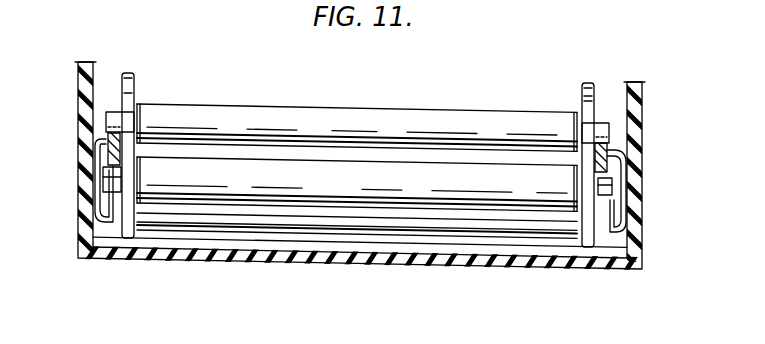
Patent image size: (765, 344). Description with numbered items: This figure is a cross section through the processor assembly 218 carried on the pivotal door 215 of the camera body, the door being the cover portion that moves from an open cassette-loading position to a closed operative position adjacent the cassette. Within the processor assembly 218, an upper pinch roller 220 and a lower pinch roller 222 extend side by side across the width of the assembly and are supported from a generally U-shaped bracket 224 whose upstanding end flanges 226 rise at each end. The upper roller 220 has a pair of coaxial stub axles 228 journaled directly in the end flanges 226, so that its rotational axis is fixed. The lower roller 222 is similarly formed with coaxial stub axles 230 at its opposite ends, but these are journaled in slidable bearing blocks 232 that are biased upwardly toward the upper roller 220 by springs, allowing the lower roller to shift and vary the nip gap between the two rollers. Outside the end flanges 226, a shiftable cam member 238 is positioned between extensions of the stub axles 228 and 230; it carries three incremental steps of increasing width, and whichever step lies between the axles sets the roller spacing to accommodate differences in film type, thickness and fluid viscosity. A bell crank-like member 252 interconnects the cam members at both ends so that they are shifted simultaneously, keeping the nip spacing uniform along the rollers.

The door 215 is at (635, 163).
The processor assembly 218 is at (409, 97).
The upper pinch roller 220 is at (357, 127).
The lower pinch roller 222 is at (357, 184).
The U-shaped bracket 224 is at (315, 247).
The end flanges 226 is at (133, 82).
The stub axles 228 is at (112, 124).
The stub axles 230 is at (108, 186).
The bearing blocks 232 is at (120, 196).
The cam member 238 is at (607, 152).
The bell crank-like member 252 is at (627, 228).